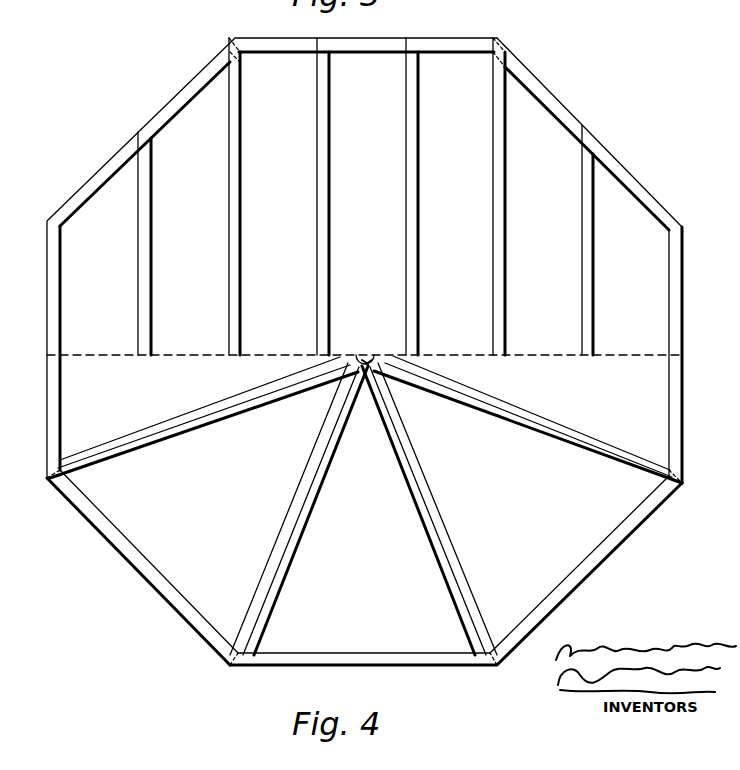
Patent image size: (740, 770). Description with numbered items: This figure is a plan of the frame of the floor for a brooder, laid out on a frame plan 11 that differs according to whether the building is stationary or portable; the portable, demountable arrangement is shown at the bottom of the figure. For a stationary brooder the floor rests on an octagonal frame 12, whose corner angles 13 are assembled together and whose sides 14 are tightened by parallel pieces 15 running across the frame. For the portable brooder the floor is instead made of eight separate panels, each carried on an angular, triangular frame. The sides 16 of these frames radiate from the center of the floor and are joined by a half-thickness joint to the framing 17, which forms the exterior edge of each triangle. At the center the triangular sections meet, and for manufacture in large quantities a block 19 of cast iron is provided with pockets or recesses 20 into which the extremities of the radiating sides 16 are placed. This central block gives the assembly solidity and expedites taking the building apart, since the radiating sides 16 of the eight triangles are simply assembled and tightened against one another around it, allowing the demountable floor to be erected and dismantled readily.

The frame plan 11 is at (364, 357).
The octagonal frame 12 is at (99, 185).
The angles 13 is at (365, 357).
The sides 14 is at (172, 109).
The parallel pieces 15 is at (152, 266).
The sides 16 is at (201, 426).
The framing 17 is at (128, 552).
The block 19 is at (352, 376).
The pockets or recesses 20 is at (380, 366).